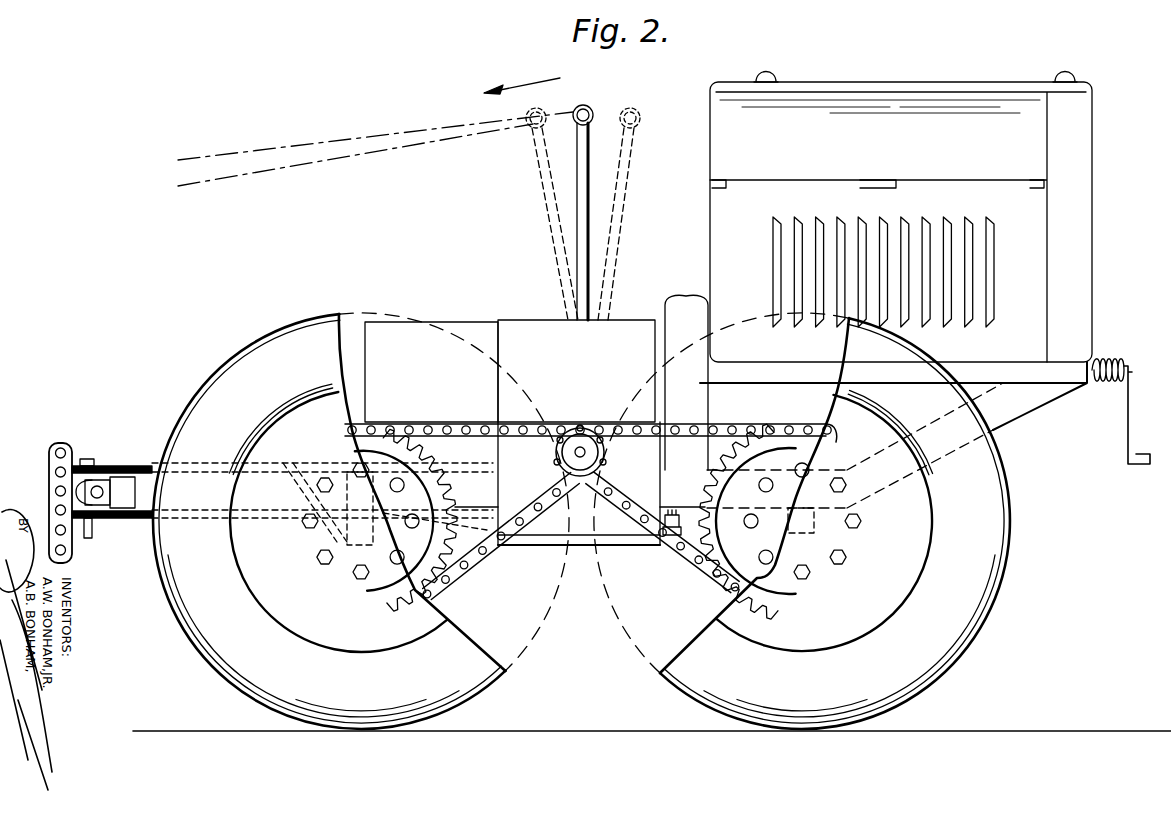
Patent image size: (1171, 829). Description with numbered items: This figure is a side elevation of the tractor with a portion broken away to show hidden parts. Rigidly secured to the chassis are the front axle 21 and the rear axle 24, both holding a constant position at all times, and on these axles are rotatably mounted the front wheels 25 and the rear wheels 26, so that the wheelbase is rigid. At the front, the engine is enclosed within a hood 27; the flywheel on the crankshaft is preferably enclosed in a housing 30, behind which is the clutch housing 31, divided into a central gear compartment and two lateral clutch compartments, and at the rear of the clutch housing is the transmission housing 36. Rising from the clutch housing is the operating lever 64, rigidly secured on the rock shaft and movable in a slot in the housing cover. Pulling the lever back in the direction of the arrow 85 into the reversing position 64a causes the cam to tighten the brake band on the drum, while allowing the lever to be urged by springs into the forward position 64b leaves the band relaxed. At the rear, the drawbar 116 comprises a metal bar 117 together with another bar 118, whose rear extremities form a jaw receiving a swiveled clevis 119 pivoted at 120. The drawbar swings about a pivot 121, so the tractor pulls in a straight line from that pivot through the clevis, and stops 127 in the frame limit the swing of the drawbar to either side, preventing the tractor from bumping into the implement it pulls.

The arrow 85 is at (522, 78).
The operating lever 64 is at (586, 167).
The reversing position 64a is at (545, 184).
The forward position 64b is at (613, 228).
The hood 27 is at (925, 268).
The flywheel housing 30 is at (686, 382).
The clutch housing 31 is at (579, 432).
The transmission housing 36 is at (431, 372).
The rear wheels 26 is at (361, 521).
The front wheels 25 is at (802, 521).
The rear axle 24 is at (366, 535).
The front axle 21 is at (795, 532).
The drawbar 116 is at (104, 460).
The metal bar 117 is at (545, 542).
The bar 118 is at (116, 520).
The swiveled clevis 119 is at (48, 483).
The pivot 120 is at (96, 523).
The stops 127 is at (54, 531).
The pivot 121 is at (671, 555).